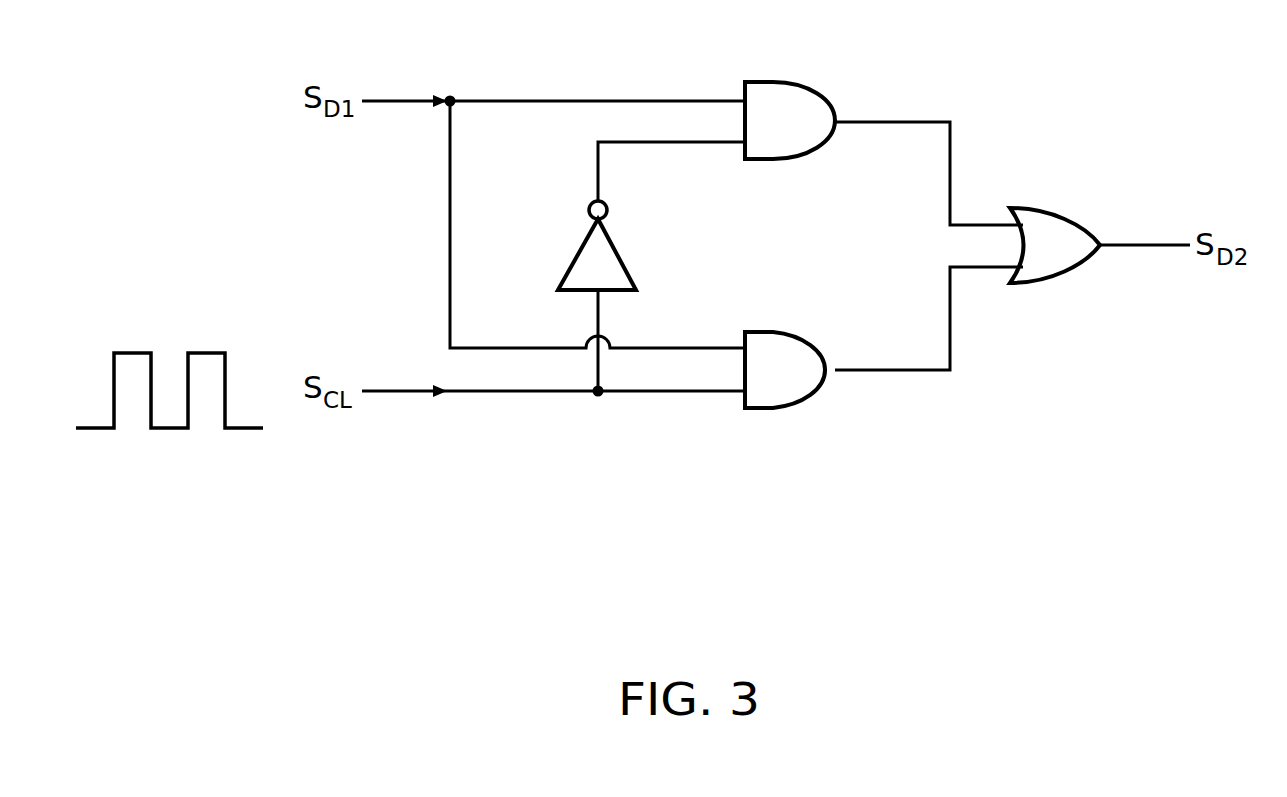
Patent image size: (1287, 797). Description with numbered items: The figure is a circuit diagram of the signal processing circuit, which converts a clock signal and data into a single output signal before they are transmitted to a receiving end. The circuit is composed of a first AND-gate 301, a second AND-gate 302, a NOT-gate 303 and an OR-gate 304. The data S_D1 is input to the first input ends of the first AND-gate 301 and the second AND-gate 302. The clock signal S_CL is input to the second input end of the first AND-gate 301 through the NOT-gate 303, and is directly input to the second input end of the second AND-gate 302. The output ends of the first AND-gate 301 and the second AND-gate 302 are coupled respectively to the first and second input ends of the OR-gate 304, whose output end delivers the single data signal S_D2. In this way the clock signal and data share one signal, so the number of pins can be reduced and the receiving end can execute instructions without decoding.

The first AND-gate 301 is at (787, 82).
The second AND-gate 302 is at (789, 410).
The NOT-gate 303 is at (621, 250).
The OR-gate 304 is at (1053, 207).